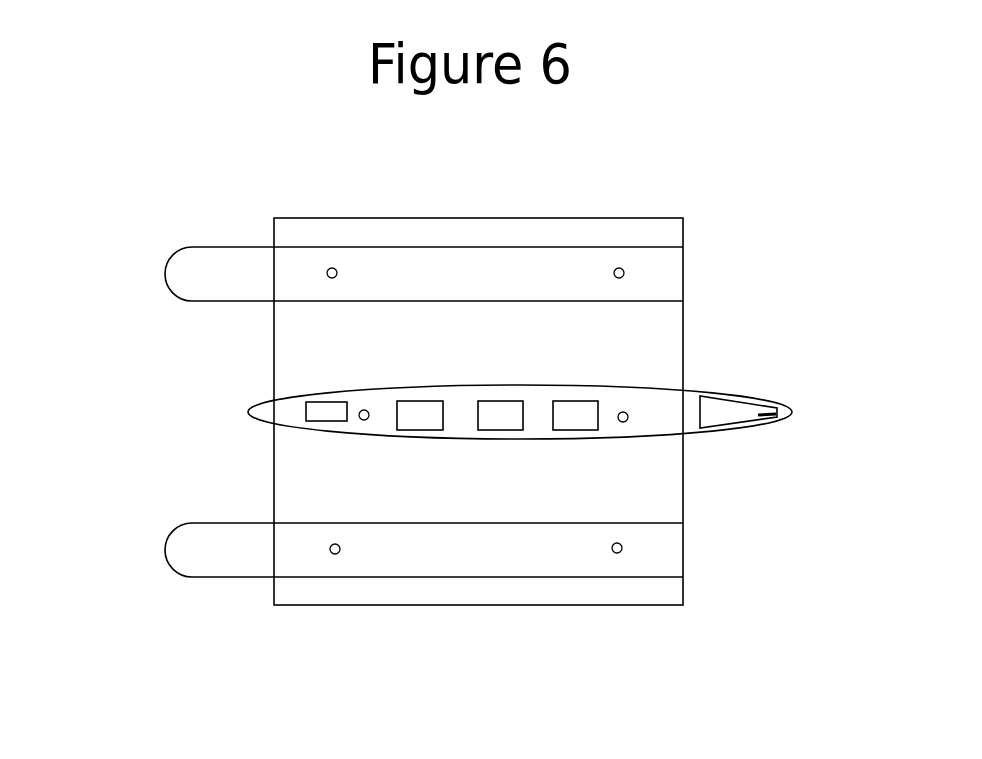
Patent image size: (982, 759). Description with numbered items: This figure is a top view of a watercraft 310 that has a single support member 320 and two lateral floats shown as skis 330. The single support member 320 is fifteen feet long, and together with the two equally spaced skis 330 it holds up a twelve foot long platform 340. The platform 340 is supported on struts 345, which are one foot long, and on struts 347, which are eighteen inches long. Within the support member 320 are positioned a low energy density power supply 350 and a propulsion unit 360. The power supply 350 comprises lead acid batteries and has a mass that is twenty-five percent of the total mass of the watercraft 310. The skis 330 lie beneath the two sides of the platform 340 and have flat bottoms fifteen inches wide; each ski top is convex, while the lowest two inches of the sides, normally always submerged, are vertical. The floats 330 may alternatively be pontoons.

The watercraft 310 is at (165, 318).
The single support member 320 is at (795, 423).
The skis 330 is at (683, 262).
The platform 340 is at (630, 479).
The struts 345 is at (600, 263).
The struts 347 is at (613, 408).
The low energy density power supply 350 is at (330, 413).
The propulsion unit 360 is at (737, 410).